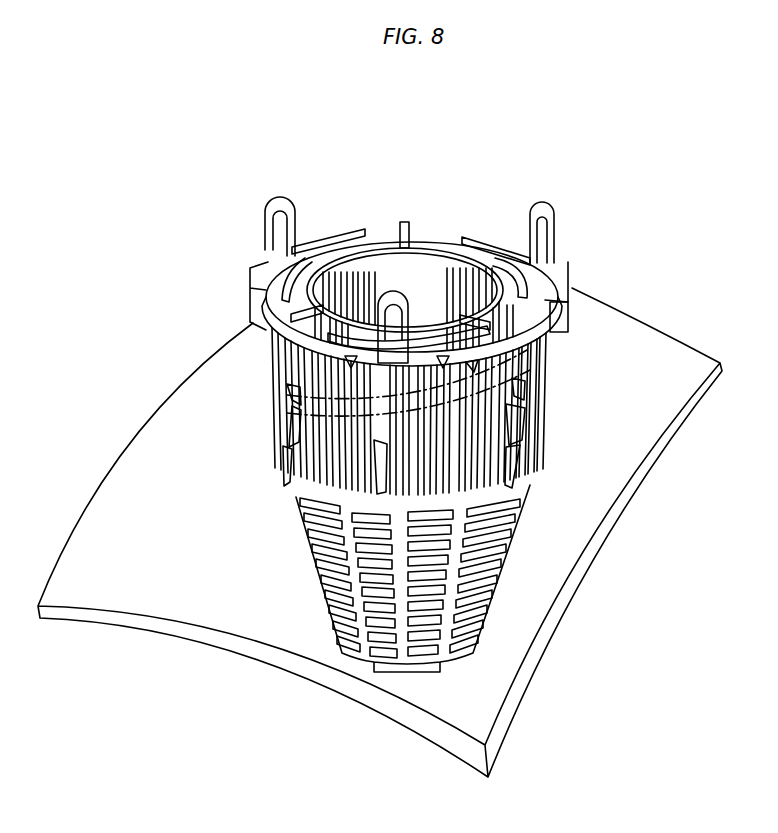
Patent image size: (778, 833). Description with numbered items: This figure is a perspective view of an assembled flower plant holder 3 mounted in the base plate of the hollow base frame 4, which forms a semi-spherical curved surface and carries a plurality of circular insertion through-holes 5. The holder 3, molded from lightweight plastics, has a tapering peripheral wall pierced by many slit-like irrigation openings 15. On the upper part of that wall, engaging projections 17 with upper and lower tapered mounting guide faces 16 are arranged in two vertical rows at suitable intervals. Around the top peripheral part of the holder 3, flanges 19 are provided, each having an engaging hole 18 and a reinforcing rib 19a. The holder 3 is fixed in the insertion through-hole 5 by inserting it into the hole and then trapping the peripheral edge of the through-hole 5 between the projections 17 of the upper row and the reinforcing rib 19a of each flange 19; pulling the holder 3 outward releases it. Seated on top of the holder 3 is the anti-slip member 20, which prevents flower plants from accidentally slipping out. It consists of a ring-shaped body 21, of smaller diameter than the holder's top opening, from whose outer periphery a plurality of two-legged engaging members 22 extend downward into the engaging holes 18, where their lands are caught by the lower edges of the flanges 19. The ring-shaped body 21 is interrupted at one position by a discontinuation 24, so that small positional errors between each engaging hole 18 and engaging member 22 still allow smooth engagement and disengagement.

The flower plant holder 3 is at (247, 313).
The hollow base frame 4 is at (627, 417).
The insertion through-hole 5 is at (527, 350).
The irrigation openings 15 is at (547, 375).
The tapered mounting guide faces 16 is at (293, 415).
The engaging projections 17 is at (280, 450).
The engaging hole 18 is at (263, 260).
The flange 19 is at (258, 275).
The reinforcing rib 19a is at (563, 323).
The anti-slip member 20 is at (433, 235).
The ring-shaped body 21 is at (433, 253).
The engaging member 22 is at (272, 212).
The discontinuation 24 is at (513, 313).